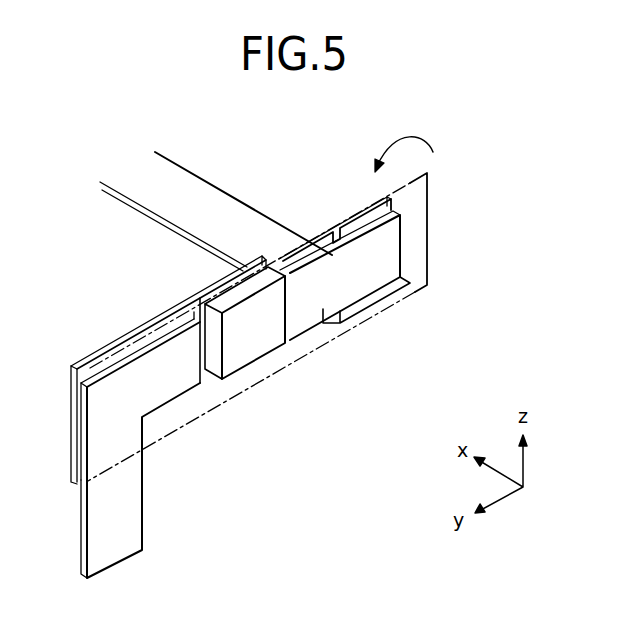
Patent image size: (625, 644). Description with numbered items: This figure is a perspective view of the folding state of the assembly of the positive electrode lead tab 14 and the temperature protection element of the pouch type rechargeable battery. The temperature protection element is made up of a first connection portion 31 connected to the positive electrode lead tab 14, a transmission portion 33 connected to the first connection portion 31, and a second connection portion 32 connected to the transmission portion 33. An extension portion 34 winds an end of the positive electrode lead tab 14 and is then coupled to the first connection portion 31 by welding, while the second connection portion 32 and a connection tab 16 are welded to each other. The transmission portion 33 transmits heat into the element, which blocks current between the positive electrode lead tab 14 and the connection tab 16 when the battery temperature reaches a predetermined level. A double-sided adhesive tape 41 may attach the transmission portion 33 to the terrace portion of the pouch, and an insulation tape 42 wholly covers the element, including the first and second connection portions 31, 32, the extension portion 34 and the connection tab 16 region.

The positive electrode lead tab 14 is at (207, 197).
The connection tab 16 is at (128, 516).
The first connection portion 31 is at (293, 251).
The second connection portion 32 is at (160, 330).
The transmission portion 33 is at (232, 370).
The extension portion 34 is at (297, 313).
The double-sided adhesive tape 41 is at (217, 287).
The insulation tape 42 is at (430, 228).